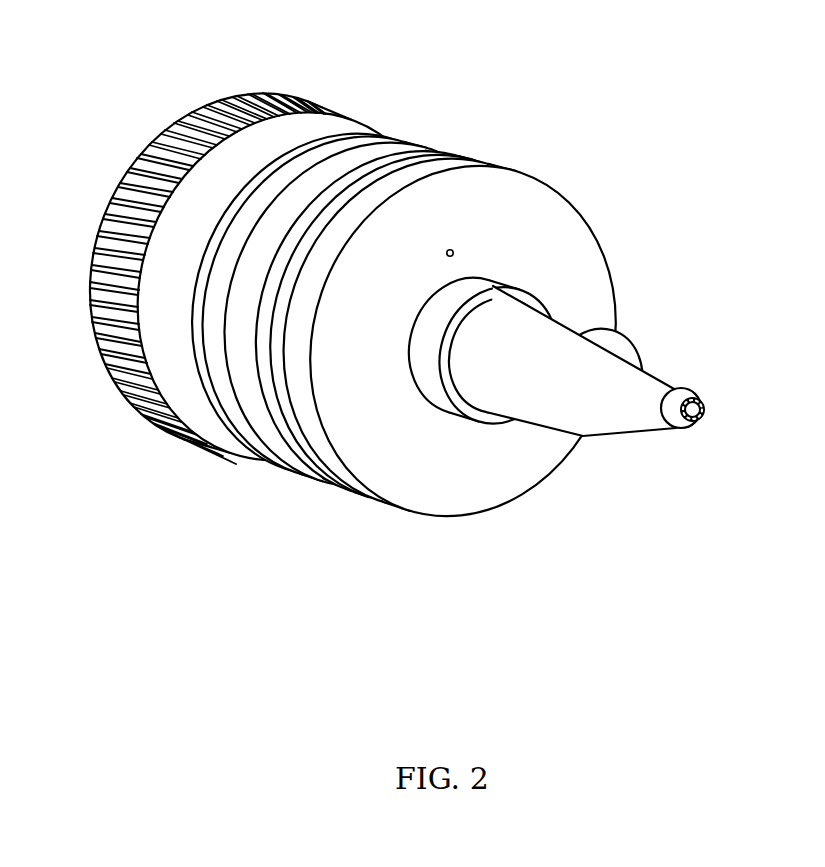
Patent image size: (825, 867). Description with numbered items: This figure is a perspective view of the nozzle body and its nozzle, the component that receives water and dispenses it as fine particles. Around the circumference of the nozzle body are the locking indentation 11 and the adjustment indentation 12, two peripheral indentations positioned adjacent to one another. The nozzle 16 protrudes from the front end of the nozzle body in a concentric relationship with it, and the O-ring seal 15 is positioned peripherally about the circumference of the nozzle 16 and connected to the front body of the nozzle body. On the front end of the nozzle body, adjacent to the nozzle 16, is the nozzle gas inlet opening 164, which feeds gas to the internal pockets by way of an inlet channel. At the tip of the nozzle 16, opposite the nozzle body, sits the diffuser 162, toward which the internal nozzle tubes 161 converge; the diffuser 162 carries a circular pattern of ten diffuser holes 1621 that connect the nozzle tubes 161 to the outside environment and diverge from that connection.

The plurality of nozzle tubes 161 is at (168, 134).
The locking indentation 11 is at (316, 152).
The adjustment indentation 12 is at (300, 432).
The nozzle gas inlet opening 164 is at (454, 253).
The O-ring seal 15 is at (428, 386).
The nozzle 16 is at (597, 355).
The diffuser 162 is at (675, 429).
The plurality of diffuser holes 1621 is at (703, 400).